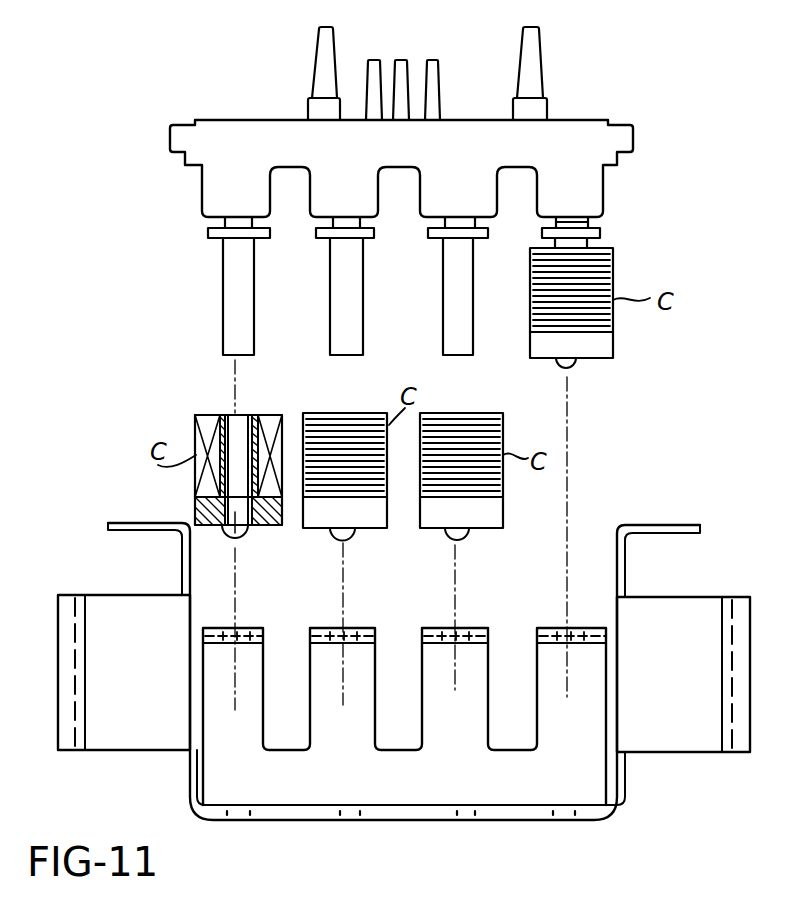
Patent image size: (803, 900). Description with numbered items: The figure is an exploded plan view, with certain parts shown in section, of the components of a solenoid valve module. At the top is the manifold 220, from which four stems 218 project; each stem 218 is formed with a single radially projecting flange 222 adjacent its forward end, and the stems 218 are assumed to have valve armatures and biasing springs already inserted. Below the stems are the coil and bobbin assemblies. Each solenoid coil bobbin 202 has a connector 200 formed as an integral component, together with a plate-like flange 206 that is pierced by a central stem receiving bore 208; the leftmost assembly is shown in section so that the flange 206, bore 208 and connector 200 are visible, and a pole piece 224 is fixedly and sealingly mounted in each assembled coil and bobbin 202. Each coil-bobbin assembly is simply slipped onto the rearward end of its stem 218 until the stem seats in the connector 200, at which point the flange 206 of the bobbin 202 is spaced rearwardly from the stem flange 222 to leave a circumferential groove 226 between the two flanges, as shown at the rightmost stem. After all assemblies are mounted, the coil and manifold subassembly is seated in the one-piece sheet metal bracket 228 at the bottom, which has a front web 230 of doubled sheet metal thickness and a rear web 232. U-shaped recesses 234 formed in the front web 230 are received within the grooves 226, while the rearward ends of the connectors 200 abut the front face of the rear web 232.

The connector 200 is at (262, 520).
The solenoid coil bobbin 202 is at (593, 361).
The flange 206 is at (530, 250).
The stem receiving bore 208 is at (230, 415).
The stem 218 is at (222, 300).
The manifold 220 is at (234, 142).
The flange 222 is at (208, 232).
The pole piece 224 is at (238, 533).
The groove 226 is at (548, 237).
The sheet metal bracket 228 is at (588, 793).
The front web 230 is at (408, 618).
The rear web 232 is at (405, 822).
The U-shaped recess 234 is at (563, 630).